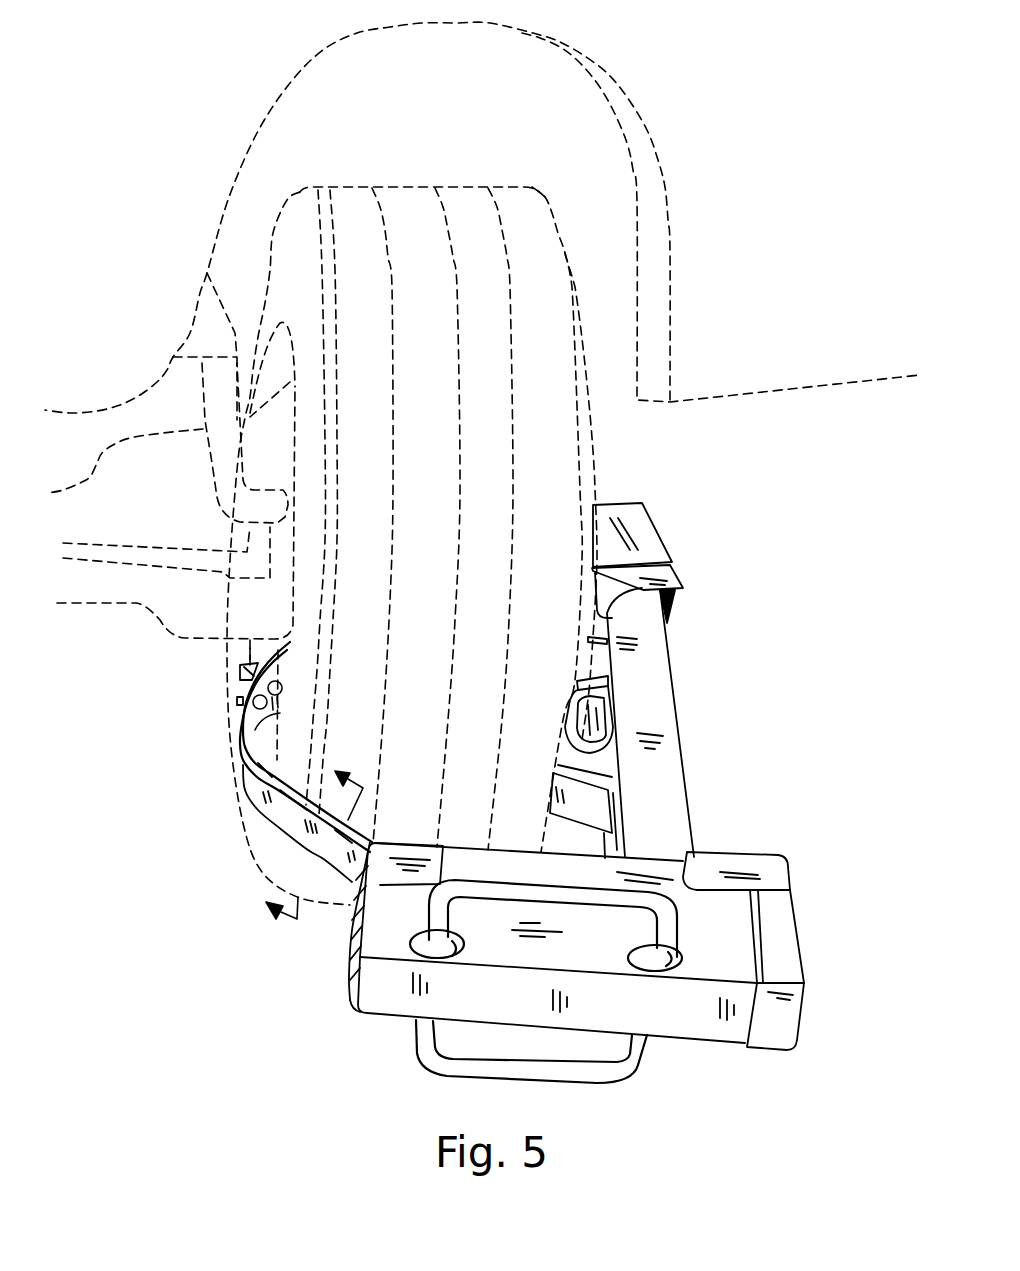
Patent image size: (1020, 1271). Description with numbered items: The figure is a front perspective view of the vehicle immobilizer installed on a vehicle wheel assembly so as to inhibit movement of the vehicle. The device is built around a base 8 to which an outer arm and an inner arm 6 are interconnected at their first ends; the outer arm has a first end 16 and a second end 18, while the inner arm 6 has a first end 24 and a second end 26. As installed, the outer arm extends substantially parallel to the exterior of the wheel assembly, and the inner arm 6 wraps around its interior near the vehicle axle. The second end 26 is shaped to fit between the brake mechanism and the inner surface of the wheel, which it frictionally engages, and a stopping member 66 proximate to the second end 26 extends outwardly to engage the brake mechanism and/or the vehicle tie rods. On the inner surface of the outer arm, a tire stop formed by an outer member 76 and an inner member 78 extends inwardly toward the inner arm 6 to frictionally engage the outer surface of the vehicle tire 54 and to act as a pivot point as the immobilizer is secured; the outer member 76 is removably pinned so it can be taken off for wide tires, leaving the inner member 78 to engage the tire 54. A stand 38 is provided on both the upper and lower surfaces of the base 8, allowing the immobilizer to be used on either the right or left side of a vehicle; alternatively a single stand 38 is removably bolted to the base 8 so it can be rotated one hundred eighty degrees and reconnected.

The base 8 is at (398, 1016).
The first end 16 is at (692, 848).
The second end 18 is at (668, 626).
The first end 24 is at (352, 957).
The second end 26 is at (243, 737).
The stand 38 is at (668, 930).
The vehicle tire 54 is at (593, 458).
The stopping member 66 is at (240, 673).
The outer member 76 is at (580, 806).
The inner member 78 is at (597, 714).
The inner arm 6 is at (306, 839).